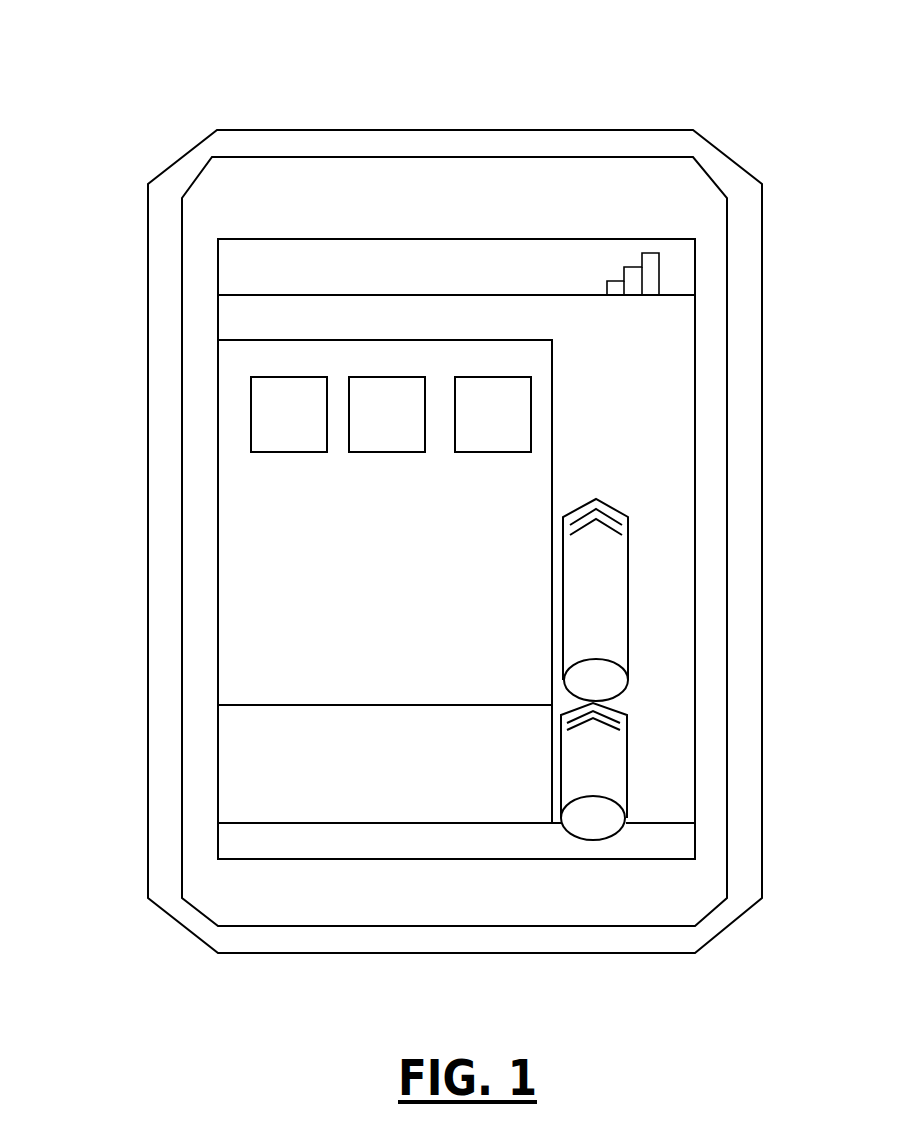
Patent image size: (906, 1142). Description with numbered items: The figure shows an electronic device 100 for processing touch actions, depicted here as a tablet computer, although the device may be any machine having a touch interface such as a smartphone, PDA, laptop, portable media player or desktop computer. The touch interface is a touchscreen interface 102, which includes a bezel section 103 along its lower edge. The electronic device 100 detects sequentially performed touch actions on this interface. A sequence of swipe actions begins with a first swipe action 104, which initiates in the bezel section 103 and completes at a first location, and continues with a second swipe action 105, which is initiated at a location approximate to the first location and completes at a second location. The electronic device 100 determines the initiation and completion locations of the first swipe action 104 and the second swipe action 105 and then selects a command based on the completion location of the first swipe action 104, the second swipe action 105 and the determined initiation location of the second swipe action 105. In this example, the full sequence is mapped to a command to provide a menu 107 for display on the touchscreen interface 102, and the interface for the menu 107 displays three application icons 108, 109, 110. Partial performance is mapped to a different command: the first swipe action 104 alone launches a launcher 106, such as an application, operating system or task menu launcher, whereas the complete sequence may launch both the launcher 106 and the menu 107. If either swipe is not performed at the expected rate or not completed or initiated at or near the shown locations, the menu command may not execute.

The electronic device 100 is at (625, 130).
The touchscreen interface 102 is at (695, 367).
The bezel section 103 is at (291, 859).
The first swipe action 104 is at (627, 818).
The second swipe action 105 is at (628, 681).
The launcher 106 is at (218, 766).
The menu 107 is at (218, 677).
The application icon 108 is at (251, 415).
The application icon 109 is at (387, 377).
The application icon 110 is at (531, 415).